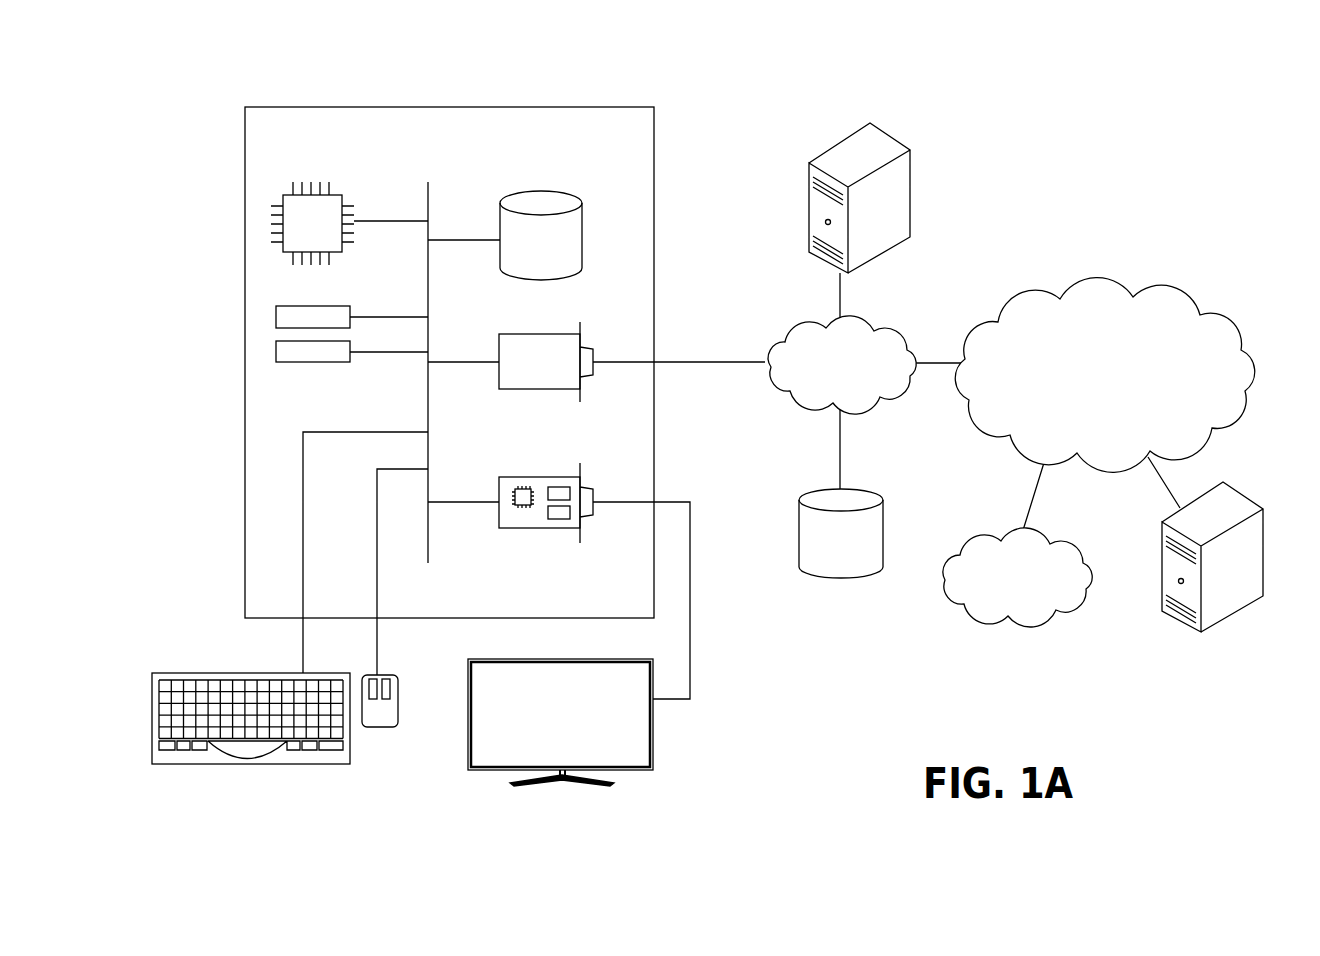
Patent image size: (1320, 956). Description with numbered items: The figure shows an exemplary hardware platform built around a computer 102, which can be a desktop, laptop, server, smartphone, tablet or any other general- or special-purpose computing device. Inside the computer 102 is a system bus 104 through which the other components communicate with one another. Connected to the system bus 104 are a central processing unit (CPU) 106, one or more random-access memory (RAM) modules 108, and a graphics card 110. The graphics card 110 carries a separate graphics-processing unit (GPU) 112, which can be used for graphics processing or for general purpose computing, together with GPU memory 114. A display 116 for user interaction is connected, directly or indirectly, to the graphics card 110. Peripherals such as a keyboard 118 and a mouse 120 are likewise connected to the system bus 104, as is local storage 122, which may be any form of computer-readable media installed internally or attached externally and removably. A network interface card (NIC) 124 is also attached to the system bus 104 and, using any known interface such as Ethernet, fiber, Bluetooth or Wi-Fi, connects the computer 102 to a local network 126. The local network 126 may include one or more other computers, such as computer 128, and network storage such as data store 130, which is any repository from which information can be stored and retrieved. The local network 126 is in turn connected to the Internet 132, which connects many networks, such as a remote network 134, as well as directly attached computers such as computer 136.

The computer 102 is at (610, 107).
The system bus 104 is at (428, 193).
The central processing unit (CPU) 106 is at (335, 188).
The random-access memory (RAM) modules 108 is at (352, 345).
The graphics card 110 is at (539, 504).
The graphics-processing unit (GPU) 112 is at (522, 507).
The GPU memory 114 is at (557, 520).
The display 116 is at (653, 750).
The keyboard 118 is at (253, 765).
The mouse 120 is at (378, 727).
The local storage 122 is at (583, 222).
The network interface card (NIC) 124 is at (498, 348).
The local network 126 is at (893, 320).
The computer 128 is at (897, 135).
The data store 130 is at (875, 490).
The Internet 132 is at (1147, 285).
The remote network 134 is at (1072, 535).
The computer 136 is at (1242, 490).